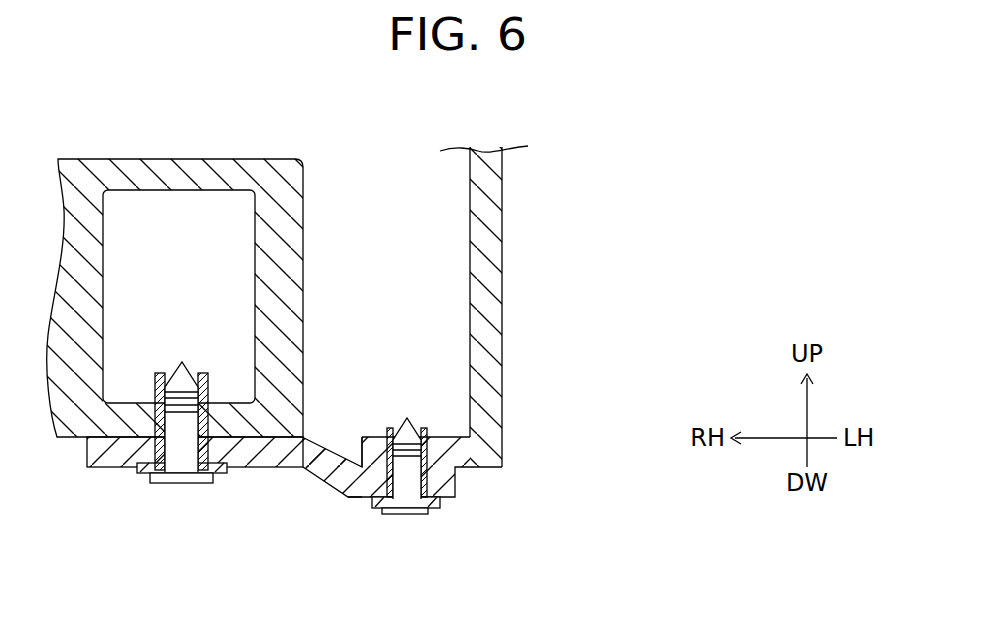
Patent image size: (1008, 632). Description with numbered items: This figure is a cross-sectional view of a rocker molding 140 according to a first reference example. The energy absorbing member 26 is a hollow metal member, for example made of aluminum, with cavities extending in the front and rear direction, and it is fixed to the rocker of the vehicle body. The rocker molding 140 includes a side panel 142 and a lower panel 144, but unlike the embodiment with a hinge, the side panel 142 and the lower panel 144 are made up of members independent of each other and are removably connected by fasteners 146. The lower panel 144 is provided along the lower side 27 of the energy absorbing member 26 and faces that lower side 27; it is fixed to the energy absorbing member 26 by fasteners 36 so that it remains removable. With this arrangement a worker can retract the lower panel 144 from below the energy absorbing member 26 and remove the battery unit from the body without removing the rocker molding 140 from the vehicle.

The energy absorbing member 26 is at (288, 178).
The lower side 27 is at (102, 465).
The fastener 36 is at (182, 466).
The rocker molding 140 is at (646, 158).
The side panel 142 is at (500, 303).
The lower panel 144 is at (322, 463).
The fastener 146 is at (403, 500).